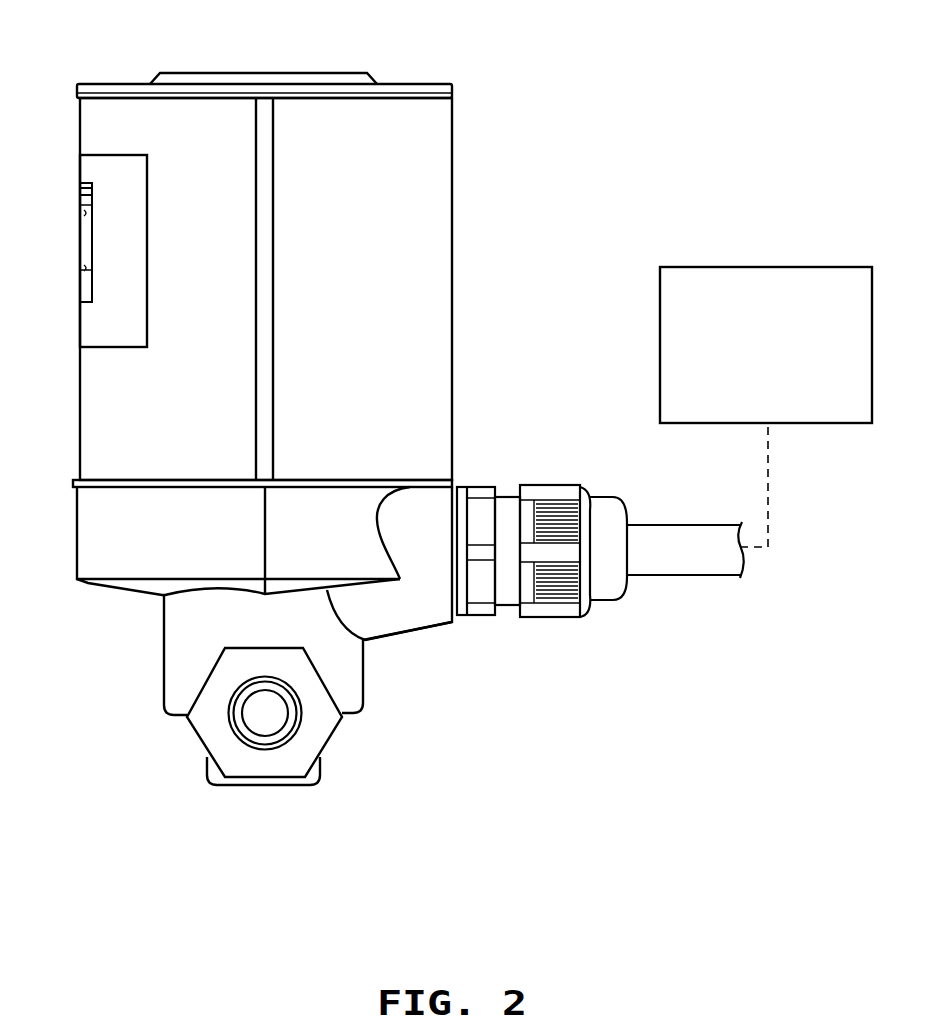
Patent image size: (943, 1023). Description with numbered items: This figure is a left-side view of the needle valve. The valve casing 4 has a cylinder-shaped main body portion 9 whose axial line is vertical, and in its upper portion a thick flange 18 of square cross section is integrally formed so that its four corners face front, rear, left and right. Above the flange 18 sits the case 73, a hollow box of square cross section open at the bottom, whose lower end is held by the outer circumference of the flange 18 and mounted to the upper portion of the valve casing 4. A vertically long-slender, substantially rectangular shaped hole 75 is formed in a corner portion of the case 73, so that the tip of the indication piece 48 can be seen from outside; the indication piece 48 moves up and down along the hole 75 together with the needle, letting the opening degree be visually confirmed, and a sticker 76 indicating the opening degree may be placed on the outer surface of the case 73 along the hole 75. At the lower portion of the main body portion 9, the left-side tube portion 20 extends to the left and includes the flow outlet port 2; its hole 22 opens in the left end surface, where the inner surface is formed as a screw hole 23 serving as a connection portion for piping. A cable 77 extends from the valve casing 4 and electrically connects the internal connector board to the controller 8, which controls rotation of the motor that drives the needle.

The flow outlet port 2 is at (260, 712).
The valve casing 4 is at (162, 662).
The controller 8 is at (762, 284).
The main body portion 9 is at (362, 672).
The flange 18 is at (100, 548).
The left-side tube portion 20 is at (337, 730).
The hole 22 is at (262, 729).
The screw hole 23 is at (328, 745).
The indication piece 48 is at (83, 207).
The case 73 is at (455, 180).
The substantially rectangular shaped hole 75 is at (82, 190).
The sticker 76 is at (93, 323).
The cable 77 is at (680, 572).